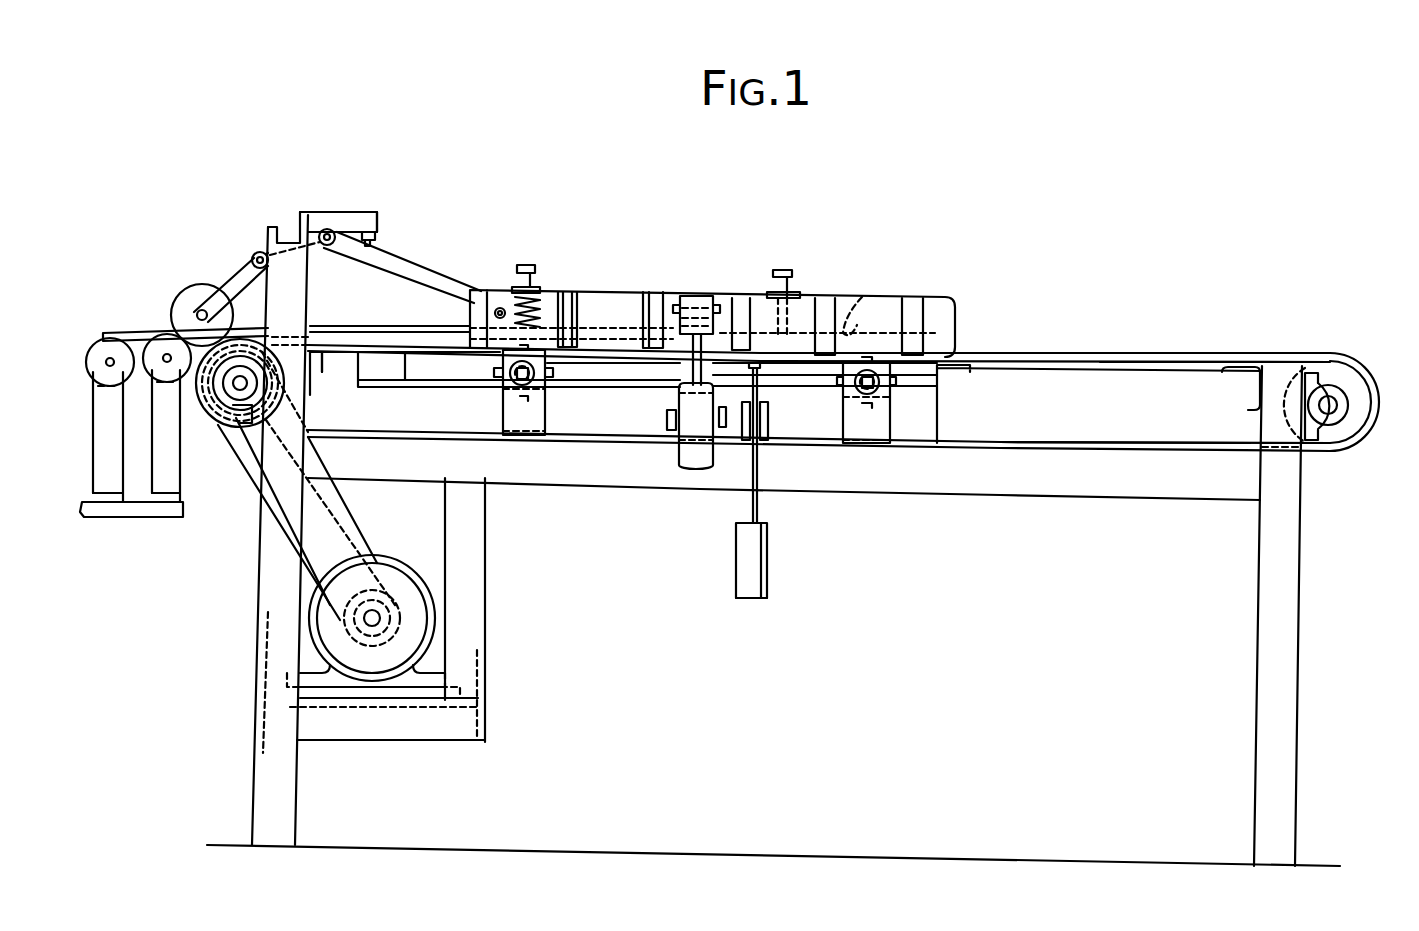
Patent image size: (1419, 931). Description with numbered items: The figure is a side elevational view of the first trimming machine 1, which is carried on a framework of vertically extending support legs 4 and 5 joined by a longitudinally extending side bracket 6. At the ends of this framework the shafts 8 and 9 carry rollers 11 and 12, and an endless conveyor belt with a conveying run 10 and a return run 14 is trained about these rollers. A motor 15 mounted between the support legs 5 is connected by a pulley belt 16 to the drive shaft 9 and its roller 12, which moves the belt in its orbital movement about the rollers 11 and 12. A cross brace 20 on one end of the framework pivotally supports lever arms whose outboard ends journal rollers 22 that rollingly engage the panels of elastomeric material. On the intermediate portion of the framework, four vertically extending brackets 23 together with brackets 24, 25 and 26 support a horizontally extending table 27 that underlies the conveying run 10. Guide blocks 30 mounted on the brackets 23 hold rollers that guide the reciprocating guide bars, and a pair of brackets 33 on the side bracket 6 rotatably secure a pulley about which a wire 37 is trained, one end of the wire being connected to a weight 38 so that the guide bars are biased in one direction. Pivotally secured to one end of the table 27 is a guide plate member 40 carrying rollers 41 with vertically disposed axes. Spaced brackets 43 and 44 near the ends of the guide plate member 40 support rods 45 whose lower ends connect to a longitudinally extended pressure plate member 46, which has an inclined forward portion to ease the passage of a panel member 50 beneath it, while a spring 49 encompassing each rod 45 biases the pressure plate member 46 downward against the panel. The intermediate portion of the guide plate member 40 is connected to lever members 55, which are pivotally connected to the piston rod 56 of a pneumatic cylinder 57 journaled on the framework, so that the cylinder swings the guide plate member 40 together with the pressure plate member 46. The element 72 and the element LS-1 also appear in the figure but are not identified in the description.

The first trimming machine 1 is at (938, 200).
The support legs 4 is at (1263, 773).
The support legs 5 is at (265, 795).
The side bracket 6 is at (1088, 491).
The shaft 8 is at (1331, 410).
The drive shaft 9 is at (240, 390).
The conveying run 10 is at (1127, 353).
The roller 11 is at (1325, 440).
The roller 12 is at (252, 465).
The return run 14 is at (1077, 440).
The motor 15 is at (420, 622).
The pulley belt 16 is at (357, 537).
The cross brace 20 is at (289, 211).
The rollers 22 is at (470, 290).
The vertically extending brackets 23 is at (515, 422).
The bracket 24 is at (937, 432).
The bracket 25 is at (312, 378).
The bracket 26 is at (1258, 388).
The table 27 is at (1137, 362).
The guide block 30 is at (547, 395).
The brackets 33 is at (745, 440).
The wire 37 is at (753, 515).
The weight 38 is at (752, 590).
The guide plate member 40 is at (957, 328).
The rollers 41 is at (588, 313).
The bracket 43 is at (795, 298).
The bracket 44 is at (507, 285).
The rod 45 is at (548, 290).
The pressure plate member 46 is at (873, 287).
The spring 49 is at (570, 315).
The panel member 50 is at (168, 330).
The lever members 55 is at (690, 295).
The piston rod 56 is at (690, 365).
The pneumatic cylinder 57 is at (697, 470).
The slide rail 72 is at (432, 383).
The limit switch LS-1 is at (378, 222).